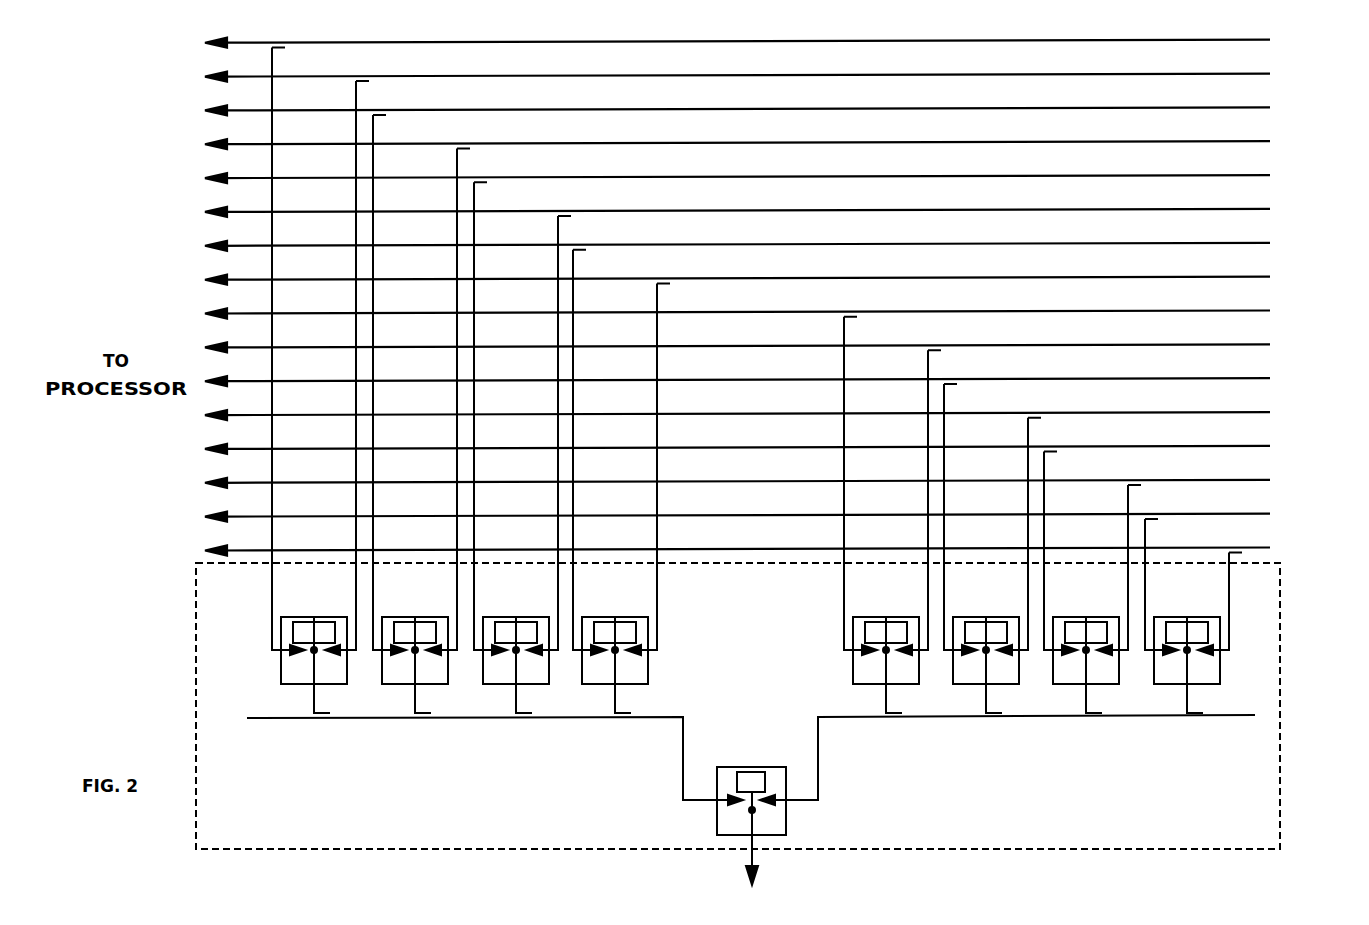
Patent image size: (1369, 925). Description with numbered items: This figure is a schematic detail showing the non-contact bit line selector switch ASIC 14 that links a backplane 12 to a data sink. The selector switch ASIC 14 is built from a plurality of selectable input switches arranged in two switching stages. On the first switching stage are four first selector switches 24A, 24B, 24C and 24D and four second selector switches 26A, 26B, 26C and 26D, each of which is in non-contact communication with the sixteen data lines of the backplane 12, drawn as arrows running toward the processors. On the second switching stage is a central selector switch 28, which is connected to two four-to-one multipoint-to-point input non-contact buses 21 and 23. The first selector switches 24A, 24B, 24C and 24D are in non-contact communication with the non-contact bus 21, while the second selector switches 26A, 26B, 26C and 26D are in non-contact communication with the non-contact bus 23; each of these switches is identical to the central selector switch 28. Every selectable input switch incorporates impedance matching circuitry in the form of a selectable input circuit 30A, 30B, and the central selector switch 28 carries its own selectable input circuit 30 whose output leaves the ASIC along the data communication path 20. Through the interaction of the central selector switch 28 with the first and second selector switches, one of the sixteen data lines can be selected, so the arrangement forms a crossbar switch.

The backplane 12 is at (1155, 34).
The selector switch ASIC 14 is at (1280, 787).
The data communication path 20 is at (752, 852).
The non-contact bus 21 is at (658, 718).
The non-contact bus 23 is at (847, 720).
The selector switch 24A is at (281, 665).
The selector switch 24B is at (382, 665).
The selector switch 24C is at (483, 665).
The selector switch 24D is at (582, 665).
The selector switch 26A is at (853, 665).
The selector switch 26B is at (953, 665).
The selector switch 26C is at (1053, 665).
The selector switch 26D is at (1154, 665).
The selector switch 28 is at (786, 823).
The selectable input circuit 30 is at (752, 770).
The selectable input circuit 30A is at (308, 620).
The selectable input circuit 30B is at (322, 620).